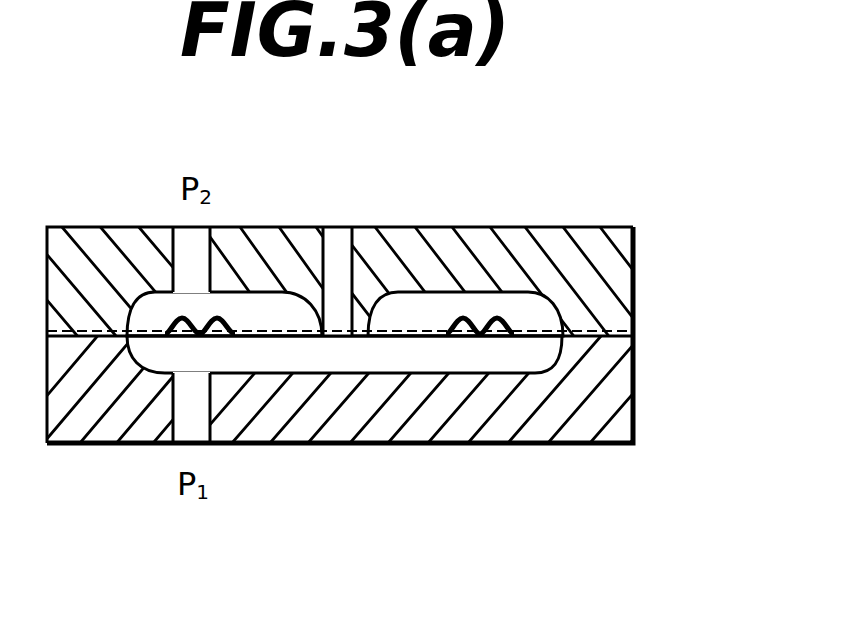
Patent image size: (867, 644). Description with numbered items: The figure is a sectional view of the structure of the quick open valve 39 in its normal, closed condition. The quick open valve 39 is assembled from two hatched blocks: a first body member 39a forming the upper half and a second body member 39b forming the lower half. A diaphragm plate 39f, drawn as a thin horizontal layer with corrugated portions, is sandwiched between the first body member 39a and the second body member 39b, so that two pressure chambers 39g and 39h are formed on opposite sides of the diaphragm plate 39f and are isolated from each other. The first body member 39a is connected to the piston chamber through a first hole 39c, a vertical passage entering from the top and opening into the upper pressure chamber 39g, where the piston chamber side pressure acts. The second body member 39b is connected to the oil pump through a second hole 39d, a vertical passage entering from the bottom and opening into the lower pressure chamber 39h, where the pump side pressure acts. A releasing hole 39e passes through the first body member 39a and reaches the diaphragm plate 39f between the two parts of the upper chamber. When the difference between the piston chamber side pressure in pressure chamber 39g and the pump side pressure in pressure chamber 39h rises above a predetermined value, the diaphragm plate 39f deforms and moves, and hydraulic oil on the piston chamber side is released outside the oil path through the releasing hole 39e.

The quick open valve 39 is at (588, 204).
The first body member 39a is at (587, 283).
The second body member 39b is at (583, 398).
The first hole 39c is at (190, 250).
The second hole 39d is at (188, 427).
The releasing hole 39e is at (338, 245).
The diaphragm plate 39f is at (432, 335).
The pressure chamber 39g is at (260, 312).
The pressure chamber 39h is at (281, 356).